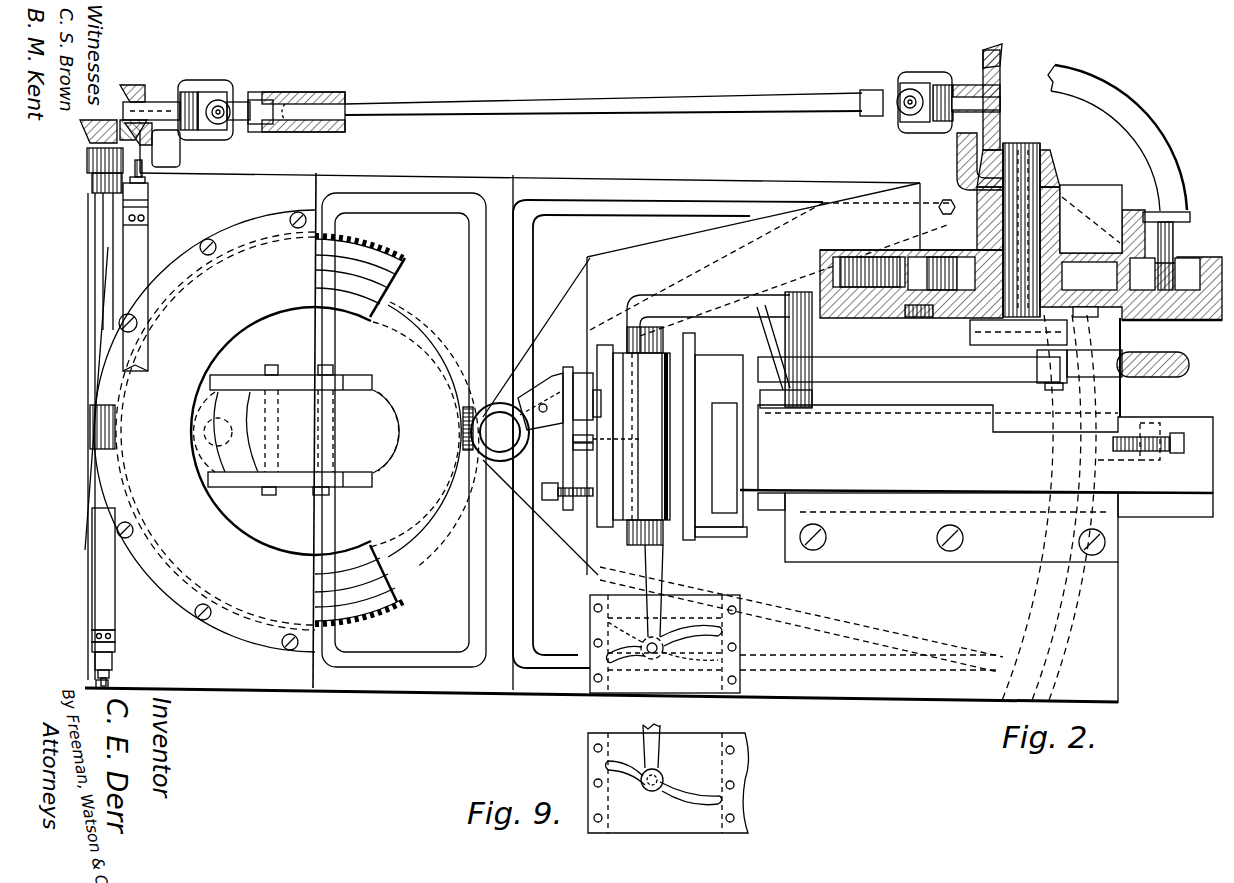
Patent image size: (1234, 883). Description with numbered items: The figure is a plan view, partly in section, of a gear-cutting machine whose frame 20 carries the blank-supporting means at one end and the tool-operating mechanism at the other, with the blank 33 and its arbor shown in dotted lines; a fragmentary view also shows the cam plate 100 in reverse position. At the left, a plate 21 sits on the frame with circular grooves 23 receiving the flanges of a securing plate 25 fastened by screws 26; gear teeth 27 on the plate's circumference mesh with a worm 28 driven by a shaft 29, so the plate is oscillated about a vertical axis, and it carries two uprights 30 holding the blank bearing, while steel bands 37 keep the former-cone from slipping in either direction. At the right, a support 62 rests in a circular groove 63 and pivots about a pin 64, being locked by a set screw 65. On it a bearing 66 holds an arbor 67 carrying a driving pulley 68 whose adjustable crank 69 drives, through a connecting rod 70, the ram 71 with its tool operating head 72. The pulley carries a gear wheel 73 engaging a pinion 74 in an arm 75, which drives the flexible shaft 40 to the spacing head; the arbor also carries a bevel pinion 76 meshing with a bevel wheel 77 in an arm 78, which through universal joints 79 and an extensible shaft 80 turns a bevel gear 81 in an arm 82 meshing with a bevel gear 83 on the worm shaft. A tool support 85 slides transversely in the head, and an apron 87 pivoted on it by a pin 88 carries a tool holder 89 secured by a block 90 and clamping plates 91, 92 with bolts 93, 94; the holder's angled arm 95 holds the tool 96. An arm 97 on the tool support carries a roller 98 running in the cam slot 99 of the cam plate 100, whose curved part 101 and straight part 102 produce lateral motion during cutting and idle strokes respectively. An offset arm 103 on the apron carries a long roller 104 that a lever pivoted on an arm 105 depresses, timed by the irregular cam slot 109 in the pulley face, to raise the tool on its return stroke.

In FIG. 2, the frame 20 is at (463, 688).
In FIG. 2, the plate 21 is at (398, 602).
In FIG. 2, the circular grooves 23 is at (383, 589).
In FIG. 2, the securing plate 25 is at (190, 607).
In FIG. 2, the screws 26 is at (285, 645).
In FIG. 2, the gear teeth 27 is at (345, 628).
In FIG. 2, the worm 28 is at (98, 444).
In FIG. 2, the shaft 29 is at (108, 248).
In FIG. 2, the uprights 30 is at (297, 487).
In FIG. 2, the blank 33 is at (410, 322).
In FIG. 2, the steel bands 37 is at (100, 514).
In FIG. 2, the flexible shaft 40 is at (1152, 155).
In FIG. 2, the support 62 is at (1104, 640).
In FIG. 9, the support 62 is at (750, 813).
In FIG. 2, the circular groove 63 is at (1077, 600).
In FIG. 2, the pin 64 is at (490, 437).
In FIG. 2, the set screw 65 is at (1182, 433).
In FIG. 2, the bearing 66 is at (1020, 210).
In FIG. 2, the arbor 67 is at (1017, 232).
In FIG. 2, the driving pulley 68 is at (1192, 320).
In FIG. 2, the crank 69 is at (978, 320).
In FIG. 2, the connecting rod 70 is at (836, 360).
In FIG. 2, the ram 71 is at (1019, 443).
In FIG. 2, the tool operating head 72 is at (732, 528).
In FIG. 2, the gear wheel 73 is at (1128, 320).
In FIG. 2, the pinion 74 is at (1180, 252).
In FIG. 2, the arm 75 is at (1110, 233).
In FIG. 2, the bevel pinion 76 is at (1025, 157).
In FIG. 2, the bevel wheel 77 is at (900, 50).
In FIG. 2, the arm 78 is at (960, 155).
In FIG. 2, the universal joints 79 is at (200, 87).
In FIG. 2, the extensible shaft 80 is at (355, 107).
In FIG. 2, the bevel gear 81 is at (150, 92).
In FIG. 2, the arm 82 is at (168, 153).
In FIG. 2, the bevel gear 83 is at (128, 140).
In FIG. 2, the tool support 85 is at (692, 345).
In FIG. 2, the apron 87 is at (635, 372).
In FIG. 2, the pin 88 is at (652, 327).
In FIG. 2, the tool holder 89 is at (570, 385).
In FIG. 2, the block 90 is at (655, 427).
In FIG. 2, the clamping plate 91 is at (605, 350).
In FIG. 2, the clamping plate 92 is at (580, 373).
In FIG. 2, the bolt 93 is at (583, 447).
In FIG. 2, the bolt 94 is at (547, 497).
In FIG. 2, the arm 95 is at (530, 398).
In FIG. 2, the tool 96 is at (517, 418).
In FIG. 2, the arm 97 is at (662, 579).
In FIG. 9, the arm 97 is at (648, 742).
In FIG. 2, the roller 98 is at (656, 660).
In FIG. 9, the roller 98 is at (652, 780).
In FIG. 2, the cam slot 99 is at (646, 660).
In FIG. 2, the cam plate 100 is at (698, 688).
In FIG. 2, the curved part 101 is at (617, 660).
In FIG. 9, the curved part 101 is at (613, 767).
In FIG. 2, the straight part 102 is at (724, 632).
In FIG. 9, the straight part 102 is at (722, 800).
In FIG. 2, the offset arm 103 is at (715, 297).
In FIG. 2, the roller 104 is at (812, 363).
In FIG. 2, the arm 105 is at (1188, 372).
In FIG. 2, the cam slot 109 is at (919, 316).